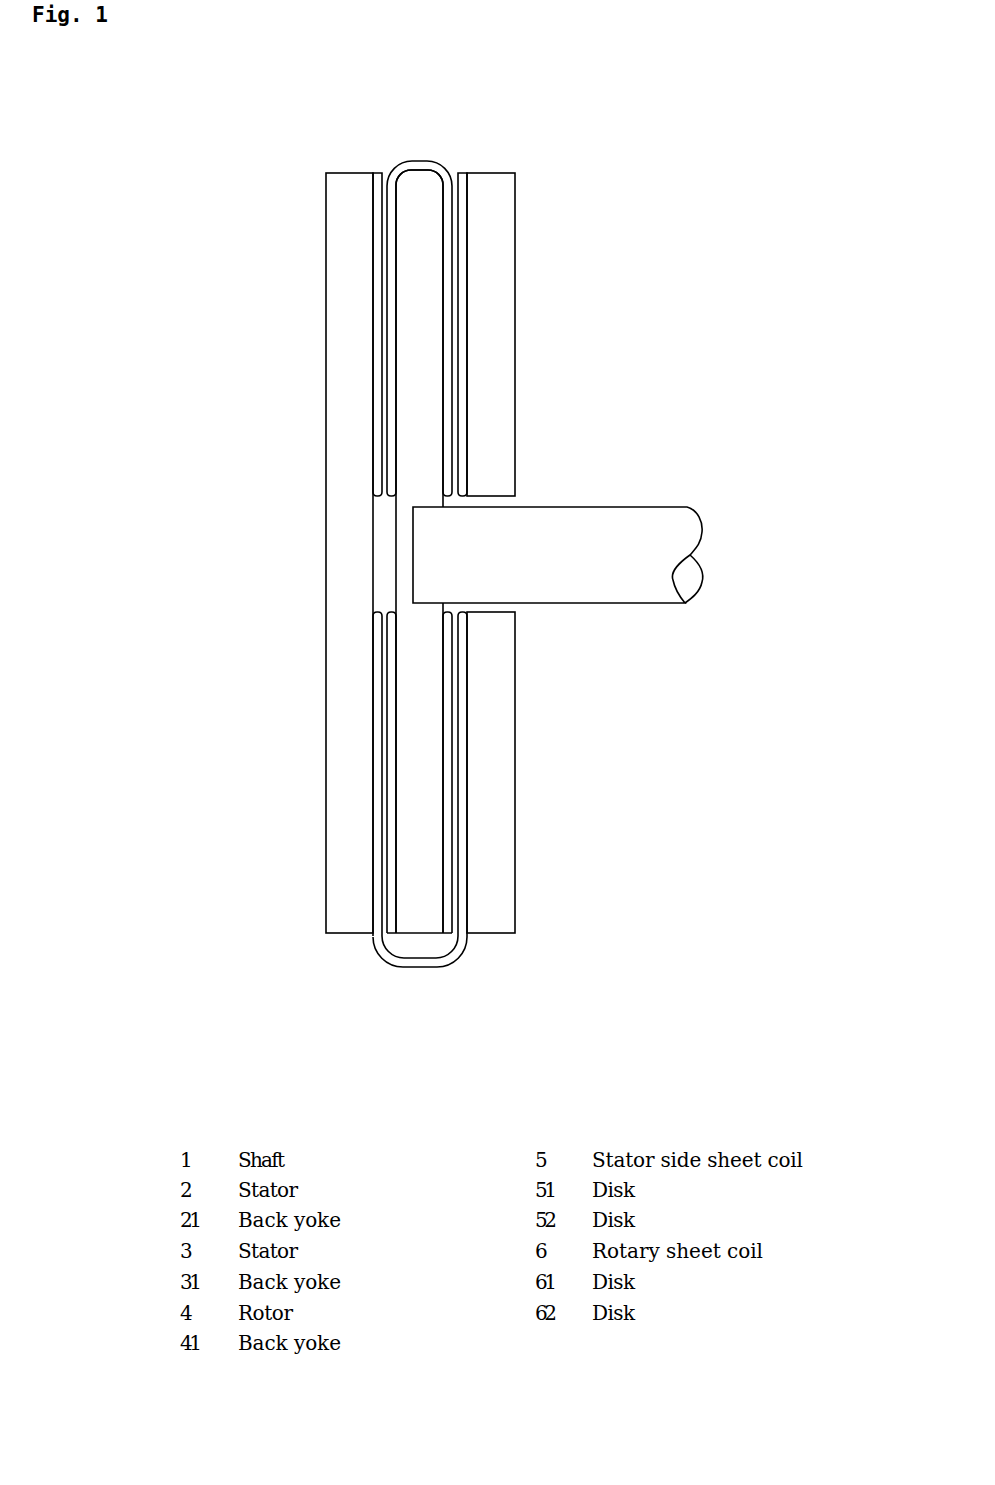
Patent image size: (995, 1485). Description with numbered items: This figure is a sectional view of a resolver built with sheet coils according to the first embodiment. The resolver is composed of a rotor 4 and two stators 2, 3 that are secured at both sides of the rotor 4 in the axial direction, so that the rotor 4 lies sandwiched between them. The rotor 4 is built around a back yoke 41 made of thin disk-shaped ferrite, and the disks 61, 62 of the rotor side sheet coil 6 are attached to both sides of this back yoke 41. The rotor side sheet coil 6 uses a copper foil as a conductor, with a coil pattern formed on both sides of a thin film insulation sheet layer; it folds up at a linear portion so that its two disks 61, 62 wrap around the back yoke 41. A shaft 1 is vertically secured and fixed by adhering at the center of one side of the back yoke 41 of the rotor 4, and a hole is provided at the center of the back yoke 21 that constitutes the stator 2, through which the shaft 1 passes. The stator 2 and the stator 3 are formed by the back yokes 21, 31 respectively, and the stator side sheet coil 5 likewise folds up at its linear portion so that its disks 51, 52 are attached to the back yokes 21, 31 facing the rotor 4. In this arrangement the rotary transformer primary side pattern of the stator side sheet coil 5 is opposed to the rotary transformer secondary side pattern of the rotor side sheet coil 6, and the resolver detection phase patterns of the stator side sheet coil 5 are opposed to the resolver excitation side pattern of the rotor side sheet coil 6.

The shaft 1 is at (550, 545).
The stator 2 is at (564, 553).
The back yoke 21 is at (498, 807).
The stator 3 is at (304, 603).
The back yoke 31 is at (347, 873).
The rotor 4 is at (524, 551).
The back yoke 41 is at (425, 325).
The stator side sheet coil 5 is at (459, 608).
The disk 51 is at (468, 213).
The disk 52 is at (377, 340).
The rotor side sheet coil 6 is at (450, 498).
The disk 61 is at (450, 398).
The disk 62 is at (393, 457).